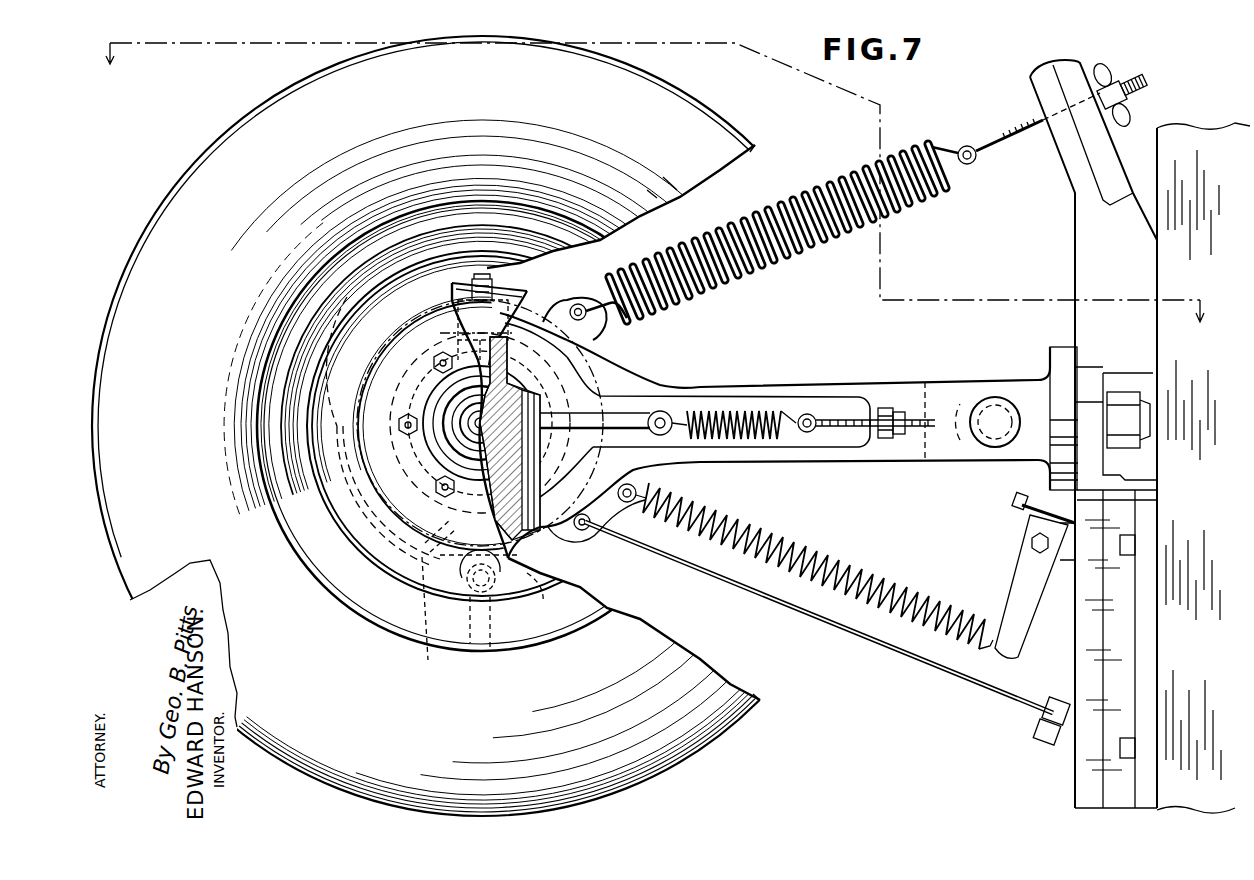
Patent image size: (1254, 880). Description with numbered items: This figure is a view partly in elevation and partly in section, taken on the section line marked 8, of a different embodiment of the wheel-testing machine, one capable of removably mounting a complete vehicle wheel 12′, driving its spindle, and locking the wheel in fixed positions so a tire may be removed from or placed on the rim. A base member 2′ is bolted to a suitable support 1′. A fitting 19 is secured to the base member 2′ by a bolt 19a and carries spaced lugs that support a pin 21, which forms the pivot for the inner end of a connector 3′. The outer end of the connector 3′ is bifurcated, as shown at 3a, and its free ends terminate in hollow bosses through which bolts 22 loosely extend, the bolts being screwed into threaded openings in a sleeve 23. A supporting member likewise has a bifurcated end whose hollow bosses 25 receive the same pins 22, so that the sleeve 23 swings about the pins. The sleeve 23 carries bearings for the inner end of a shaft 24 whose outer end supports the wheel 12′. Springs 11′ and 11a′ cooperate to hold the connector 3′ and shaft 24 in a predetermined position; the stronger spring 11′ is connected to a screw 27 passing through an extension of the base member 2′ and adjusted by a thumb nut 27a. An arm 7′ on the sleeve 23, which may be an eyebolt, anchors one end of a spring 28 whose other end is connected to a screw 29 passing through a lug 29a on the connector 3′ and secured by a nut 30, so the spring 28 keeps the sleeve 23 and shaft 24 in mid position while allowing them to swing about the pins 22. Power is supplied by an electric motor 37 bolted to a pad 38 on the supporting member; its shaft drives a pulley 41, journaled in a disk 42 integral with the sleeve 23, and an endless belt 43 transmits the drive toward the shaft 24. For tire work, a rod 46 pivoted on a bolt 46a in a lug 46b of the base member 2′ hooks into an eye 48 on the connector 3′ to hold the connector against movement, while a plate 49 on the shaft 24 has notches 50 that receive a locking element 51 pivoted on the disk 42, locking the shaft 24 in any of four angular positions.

The support 1′ is at (1168, 634).
The base member 2′ is at (1080, 765).
The connector 3′ is at (882, 452).
The bifurcated outer end of the connector 3a is at (615, 372).
The arm 7′ is at (568, 414).
The section line 8 is at (655, 196).
The spring 11′ is at (740, 282).
The spring 11a′ is at (780, 542).
The wheel 12′ is at (425, 640).
The fitting 19 is at (1050, 352).
The bolt 19a is at (1150, 428).
The pin 21 is at (995, 440).
The bolts 22 is at (558, 356).
The sleeve 23 is at (512, 370).
The shaft 24 is at (522, 432).
The hollow bosses 25 is at (505, 340).
The screw 27 is at (1018, 135).
The thumb nut 27a is at (1130, 106).
The spring 28 is at (738, 412).
The screw 29 is at (842, 430).
The lug 29a is at (887, 406).
The nut 30 is at (899, 432).
The electric motor 37 is at (498, 640).
The pad 38 is at (562, 485).
The pulley 41 is at (472, 640).
The disk 42 is at (512, 282).
The endless belt 43 is at (440, 560).
The rod 46 is at (846, 632).
The bolt 46a is at (1057, 698).
The lug 46b is at (1050, 738).
The eye 48 is at (592, 532).
The plate 49 is at (526, 298).
The notches 50 is at (455, 288).
The locking element 51 is at (483, 278).